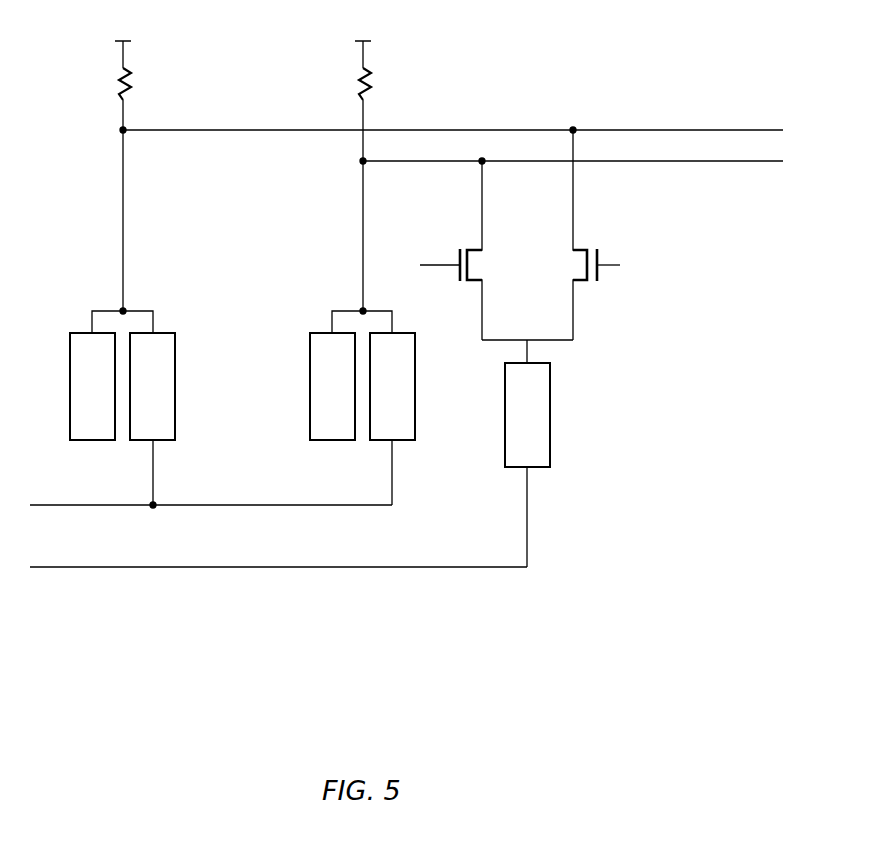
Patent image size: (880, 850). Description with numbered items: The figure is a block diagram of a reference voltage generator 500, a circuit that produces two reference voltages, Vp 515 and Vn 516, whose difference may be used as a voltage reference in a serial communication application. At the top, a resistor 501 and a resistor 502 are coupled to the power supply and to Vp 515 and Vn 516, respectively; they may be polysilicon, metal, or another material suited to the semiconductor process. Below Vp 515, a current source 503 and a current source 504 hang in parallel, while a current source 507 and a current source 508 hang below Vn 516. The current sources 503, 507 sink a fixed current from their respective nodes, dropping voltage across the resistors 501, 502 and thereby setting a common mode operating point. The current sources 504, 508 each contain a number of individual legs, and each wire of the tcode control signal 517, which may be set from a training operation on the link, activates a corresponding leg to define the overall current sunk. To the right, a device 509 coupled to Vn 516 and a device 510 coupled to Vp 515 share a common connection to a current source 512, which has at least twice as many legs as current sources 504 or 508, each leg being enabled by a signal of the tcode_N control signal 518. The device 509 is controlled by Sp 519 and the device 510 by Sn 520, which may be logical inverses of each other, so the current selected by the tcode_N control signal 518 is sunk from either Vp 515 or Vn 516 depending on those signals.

The reference voltage generator 500 is at (578, 56).
The resistor 501 is at (135, 80).
The resistor 502 is at (375, 80).
The current source 503 is at (68, 351).
The current source 504 is at (178, 351).
The current source 507 is at (308, 378).
The current source 508 is at (417, 344).
The device 509 is at (484, 240).
The device 510 is at (568, 290).
The current source 512 is at (553, 385).
The Vp 515 is at (451, 121).
The Vn 516 is at (571, 152).
The tcode n:1 517 is at (211, 483).
The tcode_N 2n:1 518 is at (278, 527).
The Sp 519 is at (418, 266).
The Sn 520 is at (629, 266).